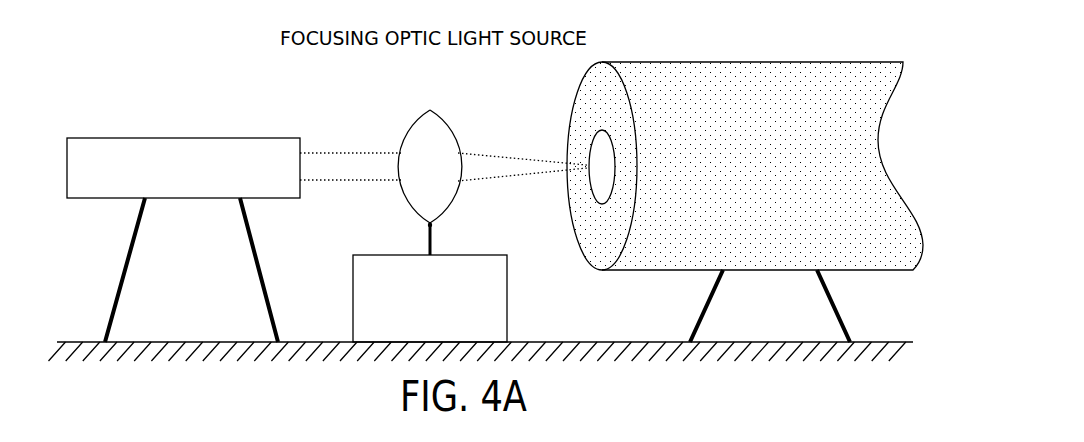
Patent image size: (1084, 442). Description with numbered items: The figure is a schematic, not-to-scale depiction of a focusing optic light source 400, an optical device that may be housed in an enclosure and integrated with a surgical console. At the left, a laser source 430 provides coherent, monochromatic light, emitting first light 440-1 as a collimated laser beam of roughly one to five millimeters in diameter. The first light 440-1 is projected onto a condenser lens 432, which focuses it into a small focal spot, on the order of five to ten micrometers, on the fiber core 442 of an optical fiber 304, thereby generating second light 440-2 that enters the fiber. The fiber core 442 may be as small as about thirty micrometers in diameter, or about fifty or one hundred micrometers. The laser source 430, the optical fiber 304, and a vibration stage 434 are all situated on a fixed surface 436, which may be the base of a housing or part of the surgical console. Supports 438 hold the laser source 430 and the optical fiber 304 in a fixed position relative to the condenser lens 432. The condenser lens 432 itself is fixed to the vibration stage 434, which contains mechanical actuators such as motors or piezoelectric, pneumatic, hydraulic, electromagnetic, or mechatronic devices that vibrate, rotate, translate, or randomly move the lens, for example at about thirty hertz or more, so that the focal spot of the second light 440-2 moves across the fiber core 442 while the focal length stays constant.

The focusing optic light source 400 is at (131, 59).
The optical fiber 304 is at (722, 62).
The laser source 430 is at (167, 189).
The condenser lens 432 is at (423, 119).
The vibration stage 434 is at (414, 335).
The fixed surface 436 is at (203, 340).
The supports 438 is at (127, 251).
The first light 440-1 is at (343, 153).
The second light 440-2 is at (508, 158).
The fiber core 442 is at (600, 185).